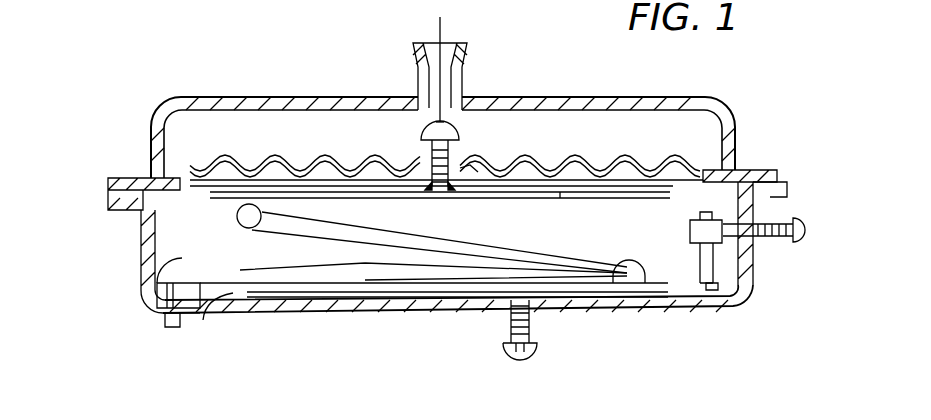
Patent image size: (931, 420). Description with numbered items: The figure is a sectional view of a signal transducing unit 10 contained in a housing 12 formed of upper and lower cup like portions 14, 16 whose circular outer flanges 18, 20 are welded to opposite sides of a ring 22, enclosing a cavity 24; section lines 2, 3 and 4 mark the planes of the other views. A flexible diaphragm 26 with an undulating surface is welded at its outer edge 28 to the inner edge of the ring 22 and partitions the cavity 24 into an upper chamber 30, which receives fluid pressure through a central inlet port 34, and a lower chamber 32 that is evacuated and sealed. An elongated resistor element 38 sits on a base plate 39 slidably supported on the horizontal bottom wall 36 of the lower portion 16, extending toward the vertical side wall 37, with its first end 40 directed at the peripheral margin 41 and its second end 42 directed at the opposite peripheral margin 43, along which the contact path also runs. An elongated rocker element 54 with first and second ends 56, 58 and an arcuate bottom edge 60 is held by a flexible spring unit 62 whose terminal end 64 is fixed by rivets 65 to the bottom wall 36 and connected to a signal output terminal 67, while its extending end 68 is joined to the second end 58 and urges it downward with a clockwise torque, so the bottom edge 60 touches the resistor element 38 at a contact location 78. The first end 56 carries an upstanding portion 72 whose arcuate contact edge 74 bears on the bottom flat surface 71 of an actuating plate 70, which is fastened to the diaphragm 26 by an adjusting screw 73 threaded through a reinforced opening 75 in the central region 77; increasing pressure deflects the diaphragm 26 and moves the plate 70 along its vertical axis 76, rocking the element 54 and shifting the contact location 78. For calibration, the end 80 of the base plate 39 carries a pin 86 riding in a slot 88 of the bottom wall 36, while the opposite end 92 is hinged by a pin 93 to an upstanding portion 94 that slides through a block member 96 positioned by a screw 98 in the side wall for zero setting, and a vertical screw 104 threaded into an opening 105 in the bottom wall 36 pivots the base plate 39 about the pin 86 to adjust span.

The section line 2- 2 is at (68, 205).
The section line 3- 3 is at (247, 325).
The section line 4- 4 is at (732, 210).
The signal transducing unit 10 is at (557, 62).
The housing 12 is at (735, 114).
The upper cup like portion 14 is at (707, 92).
The lower cup like portion 16 is at (755, 280).
The circular outer flange 18 is at (745, 165).
The circular outer flange 20 is at (761, 233).
The ring 22 is at (773, 172).
The cavity 24 is at (245, 144).
The flexible diaphragm 26 is at (292, 165).
The outer edge weld 28 is at (192, 190).
The upper chamber 30 is at (622, 138).
The lower chamber 32 is at (662, 227).
The central inlet port 34 is at (418, 60).
The bottom wall 36 is at (448, 295).
The vertical side wall 37 is at (141, 233).
The resistor element 38 is at (415, 293).
The base plate 39 is at (615, 293).
The first end 40 is at (190, 327).
The peripheral margin 41 is at (141, 300).
The second end 42 is at (634, 270).
The opposite peripheral margin 43 is at (355, 318).
The rocker element 54 is at (472, 258).
The first end 56 is at (251, 232).
The second end 58 is at (562, 290).
The arcuate bottom edge 60 is at (305, 250).
The spring unit 62 is at (413, 262).
The terminal end 64 is at (192, 283).
The rivets 65 is at (157, 262).
The signal output terminal 67 is at (163, 328).
The extending end 68 is at (608, 268).
The actuating plate 70 is at (547, 241).
The bottom flat surface 71 is at (566, 200).
The upstanding portion 72 is at (262, 213).
The adjusting screw 73 is at (460, 132).
The arcuate contact edge 74 is at (205, 222).
The reinforced opening 75 is at (433, 162).
The vertical axis 76 is at (441, 26).
The central region 77 is at (468, 165).
The contact location 78 is at (500, 285).
The end 80 is at (277, 303).
The pin 86 is at (247, 332).
The slot 88 is at (335, 303).
The opposite end 92 is at (665, 293).
The pin 93 is at (711, 290).
The upstanding portion 94 is at (700, 263).
The block member 96 is at (690, 236).
The screw 98 is at (780, 238).
The screw 104 is at (533, 362).
The opening 105 is at (497, 297).